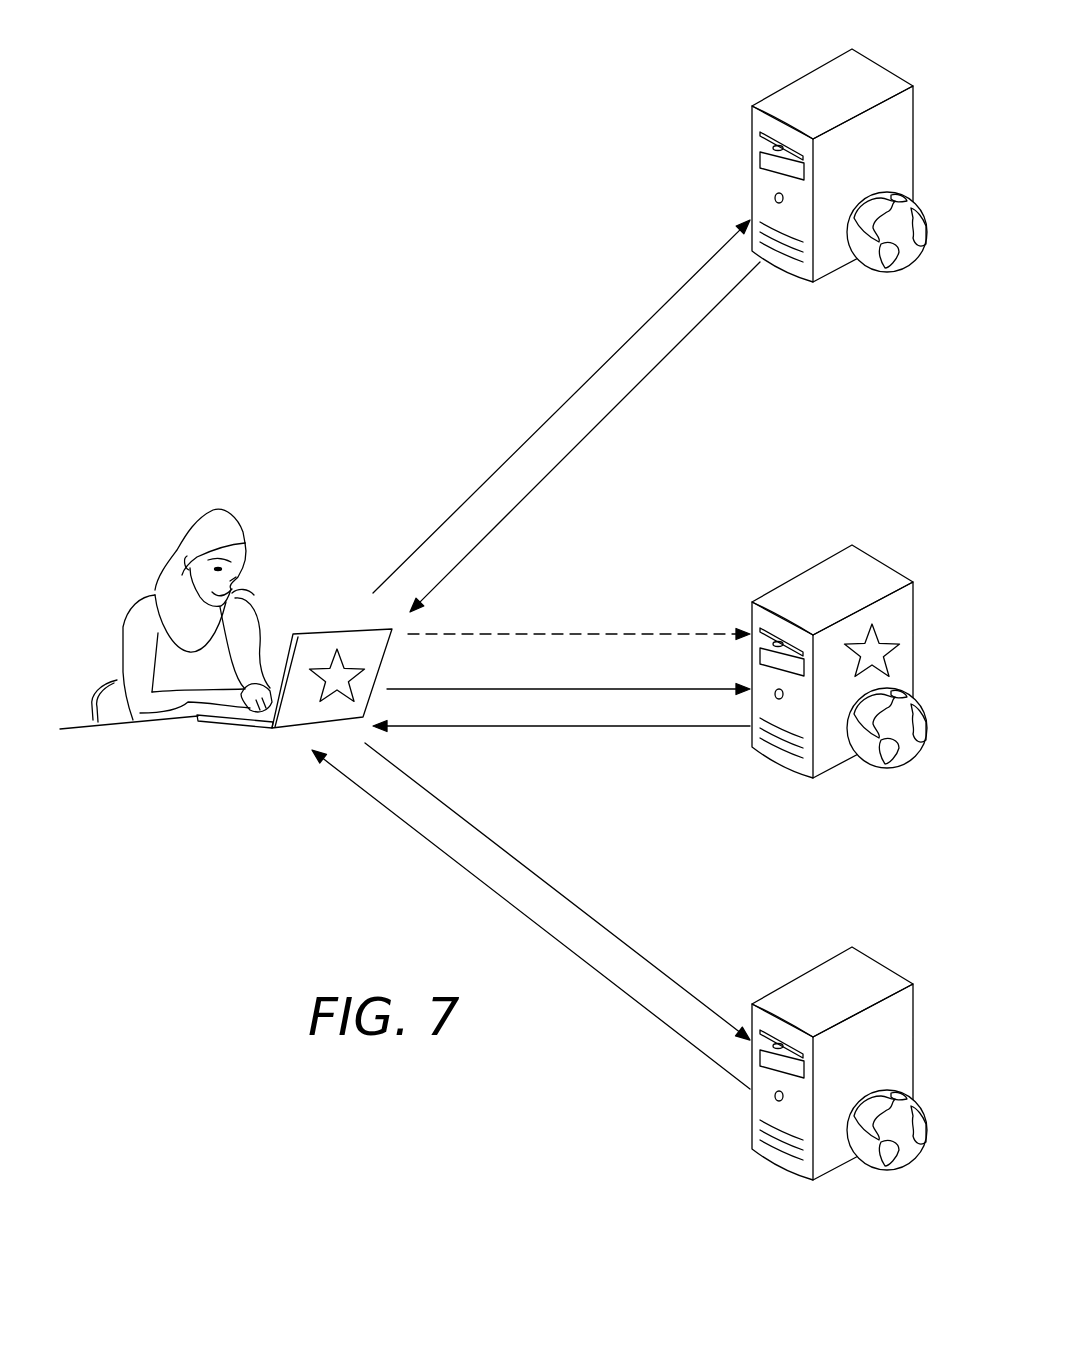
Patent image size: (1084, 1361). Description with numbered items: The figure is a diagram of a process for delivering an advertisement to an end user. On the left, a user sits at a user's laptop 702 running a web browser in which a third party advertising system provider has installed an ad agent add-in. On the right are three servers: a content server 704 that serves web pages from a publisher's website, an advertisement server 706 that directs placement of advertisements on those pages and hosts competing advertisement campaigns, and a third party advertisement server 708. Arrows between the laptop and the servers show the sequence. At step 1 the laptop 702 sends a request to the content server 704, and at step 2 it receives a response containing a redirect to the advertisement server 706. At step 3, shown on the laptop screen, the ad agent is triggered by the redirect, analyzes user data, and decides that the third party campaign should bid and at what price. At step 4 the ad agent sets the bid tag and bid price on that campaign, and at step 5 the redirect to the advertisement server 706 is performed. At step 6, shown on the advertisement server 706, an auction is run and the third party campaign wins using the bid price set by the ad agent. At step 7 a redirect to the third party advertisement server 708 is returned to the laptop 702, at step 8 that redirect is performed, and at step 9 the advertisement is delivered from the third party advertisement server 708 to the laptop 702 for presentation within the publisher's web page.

The user's laptop 702 is at (294, 657).
The content server 704 is at (878, 64).
The advertisement server 706 is at (840, 688).
The third party advertisement server 708 is at (888, 970).
The step 1 is at (561, 406).
The step 2 is at (585, 437).
The step 3 is at (318, 630).
The step 4 is at (579, 624).
The step 5 is at (568, 679).
The step 6 is at (871, 650).
The step 7 is at (561, 738).
The step 8 is at (557, 891).
The step 9 is at (531, 919).